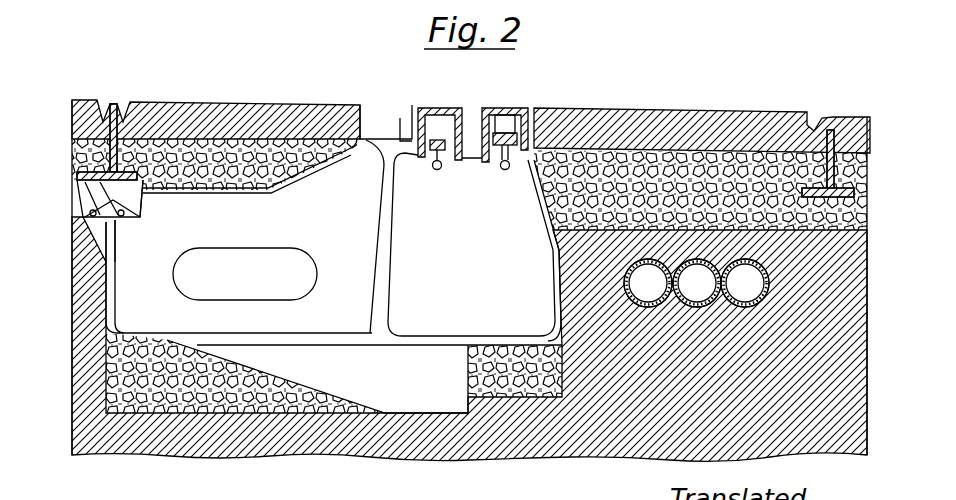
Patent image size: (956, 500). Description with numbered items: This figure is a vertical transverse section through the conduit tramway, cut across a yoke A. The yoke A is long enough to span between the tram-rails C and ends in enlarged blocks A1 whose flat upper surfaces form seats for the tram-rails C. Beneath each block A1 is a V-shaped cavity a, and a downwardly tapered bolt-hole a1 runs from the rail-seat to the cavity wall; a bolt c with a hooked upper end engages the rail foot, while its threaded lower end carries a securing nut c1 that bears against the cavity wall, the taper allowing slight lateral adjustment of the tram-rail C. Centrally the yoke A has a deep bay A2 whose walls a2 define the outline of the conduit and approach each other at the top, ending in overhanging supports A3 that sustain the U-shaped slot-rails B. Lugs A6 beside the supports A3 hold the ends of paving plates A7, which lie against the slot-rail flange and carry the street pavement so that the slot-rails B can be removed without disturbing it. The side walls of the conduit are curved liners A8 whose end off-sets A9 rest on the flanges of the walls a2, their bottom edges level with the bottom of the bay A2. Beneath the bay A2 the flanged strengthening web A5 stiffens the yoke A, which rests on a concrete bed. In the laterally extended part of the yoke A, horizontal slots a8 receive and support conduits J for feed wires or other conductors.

The yoke A is at (170, 326).
The block A1 is at (150, 194).
The bay A2 is at (471, 248).
The overhanging support A3 is at (447, 162).
The strengthening web A5 is at (364, 376).
The lug A6 is at (410, 138).
The paving plate A7 is at (535, 113).
The liner A8 is at (560, 290).
The off-set A9 is at (443, 412).
The slot-rail B is at (426, 108).
The tram-rail C is at (116, 105).
The conduit J is at (660, 306).
The V-shaped cavity a is at (117, 222).
The bolt-hole a1 is at (148, 192).
The wall of the bay a2 is at (392, 205).
The slot a8 is at (242, 254).
The bolt c is at (148, 196).
The securing nut c1 is at (133, 220).